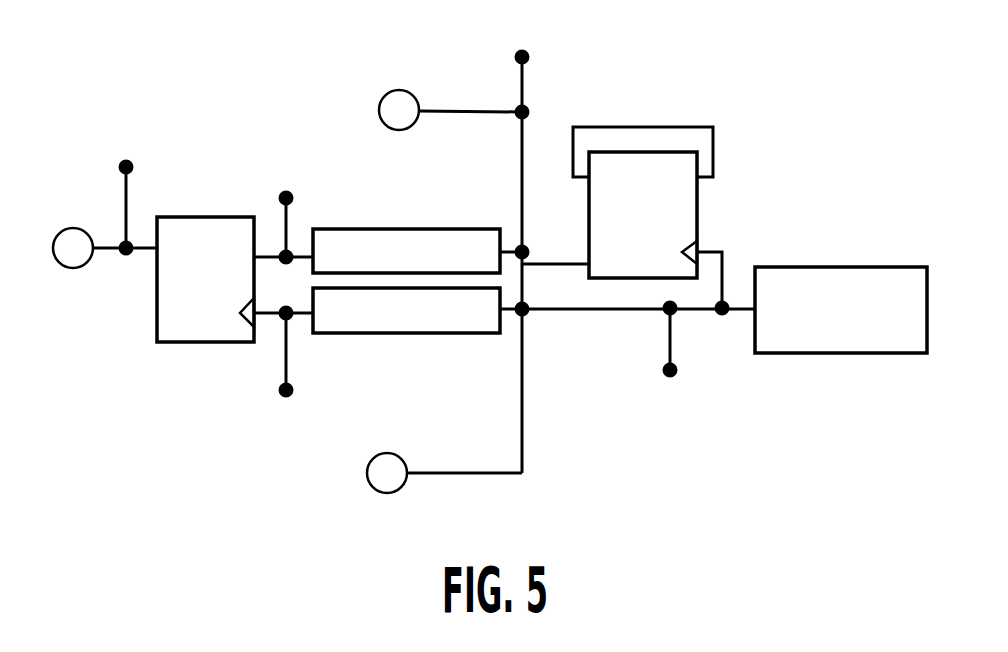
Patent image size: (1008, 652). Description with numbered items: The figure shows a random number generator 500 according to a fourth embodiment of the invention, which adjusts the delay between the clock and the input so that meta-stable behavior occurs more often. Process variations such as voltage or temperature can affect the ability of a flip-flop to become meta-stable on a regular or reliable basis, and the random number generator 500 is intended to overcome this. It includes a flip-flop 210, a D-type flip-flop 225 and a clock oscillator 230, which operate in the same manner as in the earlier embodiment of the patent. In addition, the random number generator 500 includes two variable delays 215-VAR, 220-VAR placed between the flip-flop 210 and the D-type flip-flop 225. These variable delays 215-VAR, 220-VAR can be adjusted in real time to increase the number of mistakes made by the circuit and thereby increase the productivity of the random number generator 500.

The random number generator 500 is at (158, 55).
The flip-flop 210 is at (157, 318).
The variable delay 215-VAR is at (437, 229).
The variable delay 220-VAR is at (428, 334).
The D-type flip-flop 225 is at (699, 199).
The clock oscillator 230 is at (843, 353).